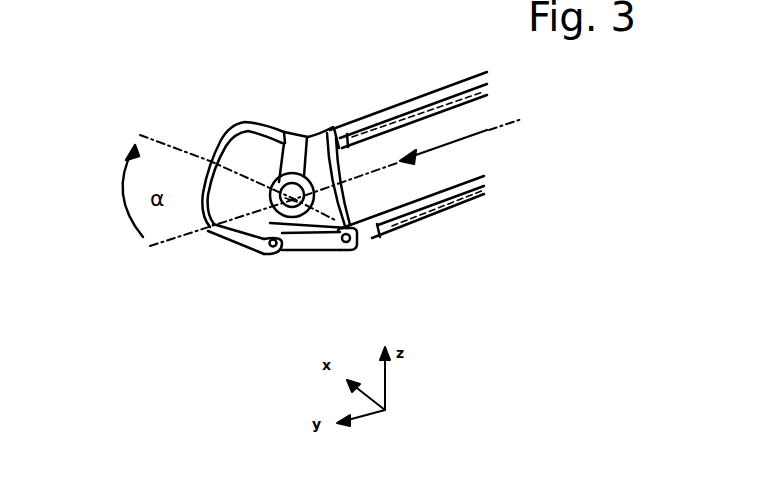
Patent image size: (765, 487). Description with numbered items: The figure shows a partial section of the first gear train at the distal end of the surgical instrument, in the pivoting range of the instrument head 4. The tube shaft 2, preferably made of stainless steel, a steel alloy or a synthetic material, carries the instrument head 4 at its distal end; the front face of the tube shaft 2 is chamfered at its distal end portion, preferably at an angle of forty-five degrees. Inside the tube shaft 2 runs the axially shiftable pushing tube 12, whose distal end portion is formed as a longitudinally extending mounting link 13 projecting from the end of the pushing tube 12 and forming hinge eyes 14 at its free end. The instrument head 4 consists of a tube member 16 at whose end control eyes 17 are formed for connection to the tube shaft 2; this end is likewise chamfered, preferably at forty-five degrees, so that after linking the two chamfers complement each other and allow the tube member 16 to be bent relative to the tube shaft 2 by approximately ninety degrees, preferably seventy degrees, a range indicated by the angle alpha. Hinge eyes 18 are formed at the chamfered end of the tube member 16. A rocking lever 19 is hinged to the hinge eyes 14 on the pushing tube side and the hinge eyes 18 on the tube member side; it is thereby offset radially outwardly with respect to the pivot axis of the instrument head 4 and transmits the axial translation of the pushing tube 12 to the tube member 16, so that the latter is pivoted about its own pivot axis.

The tube shaft 2 is at (474, 80).
The instrument head 4 is at (208, 239).
The pushing tube 12 is at (382, 145).
The mounting link 13 is at (377, 224).
The hinge eyes 14 is at (347, 244).
The tube member 16 is at (263, 128).
The control eyes 17 is at (297, 176).
The hinge eyes 18 is at (276, 251).
The rocking lever 19 is at (318, 233).